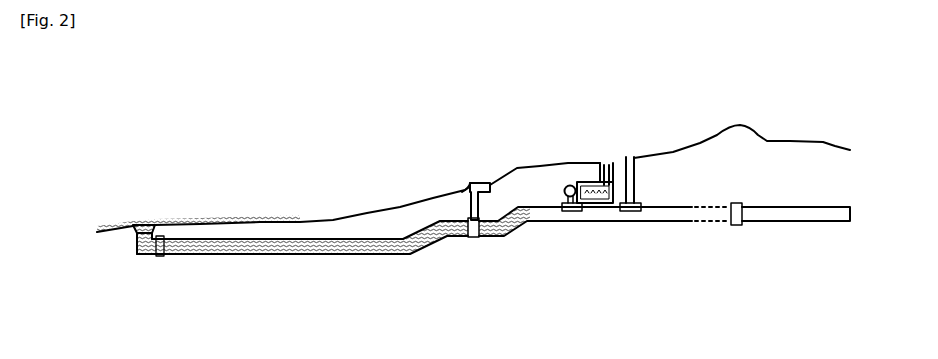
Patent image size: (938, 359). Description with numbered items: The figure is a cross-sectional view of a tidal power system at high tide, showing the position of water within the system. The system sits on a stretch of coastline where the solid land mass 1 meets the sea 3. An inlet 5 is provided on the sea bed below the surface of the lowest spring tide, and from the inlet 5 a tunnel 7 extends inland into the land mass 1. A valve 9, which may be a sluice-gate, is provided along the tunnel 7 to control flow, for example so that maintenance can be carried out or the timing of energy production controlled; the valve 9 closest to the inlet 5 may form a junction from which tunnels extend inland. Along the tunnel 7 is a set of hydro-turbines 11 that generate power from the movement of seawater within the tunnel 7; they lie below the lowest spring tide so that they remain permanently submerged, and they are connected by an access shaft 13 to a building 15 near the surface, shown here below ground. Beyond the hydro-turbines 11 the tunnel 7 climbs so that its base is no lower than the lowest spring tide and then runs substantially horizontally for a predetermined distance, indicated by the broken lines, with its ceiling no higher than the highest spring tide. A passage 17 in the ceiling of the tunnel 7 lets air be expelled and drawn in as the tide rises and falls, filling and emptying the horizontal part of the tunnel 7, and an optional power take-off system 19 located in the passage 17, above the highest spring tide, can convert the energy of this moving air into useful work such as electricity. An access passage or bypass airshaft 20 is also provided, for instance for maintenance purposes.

The land mass 1 is at (737, 148).
The sea 3 is at (100, 204).
The inlet 5 is at (144, 219).
The tunnel 7 is at (382, 255).
The valve 9 is at (157, 255).
The hydro-turbine 11 is at (487, 237).
The access/maintenance shaft 13 is at (481, 183).
The building 15 is at (465, 190).
The passage 17 is at (613, 162).
The power take-off system 19 is at (588, 182).
The bypass airshaft 20 is at (638, 158).